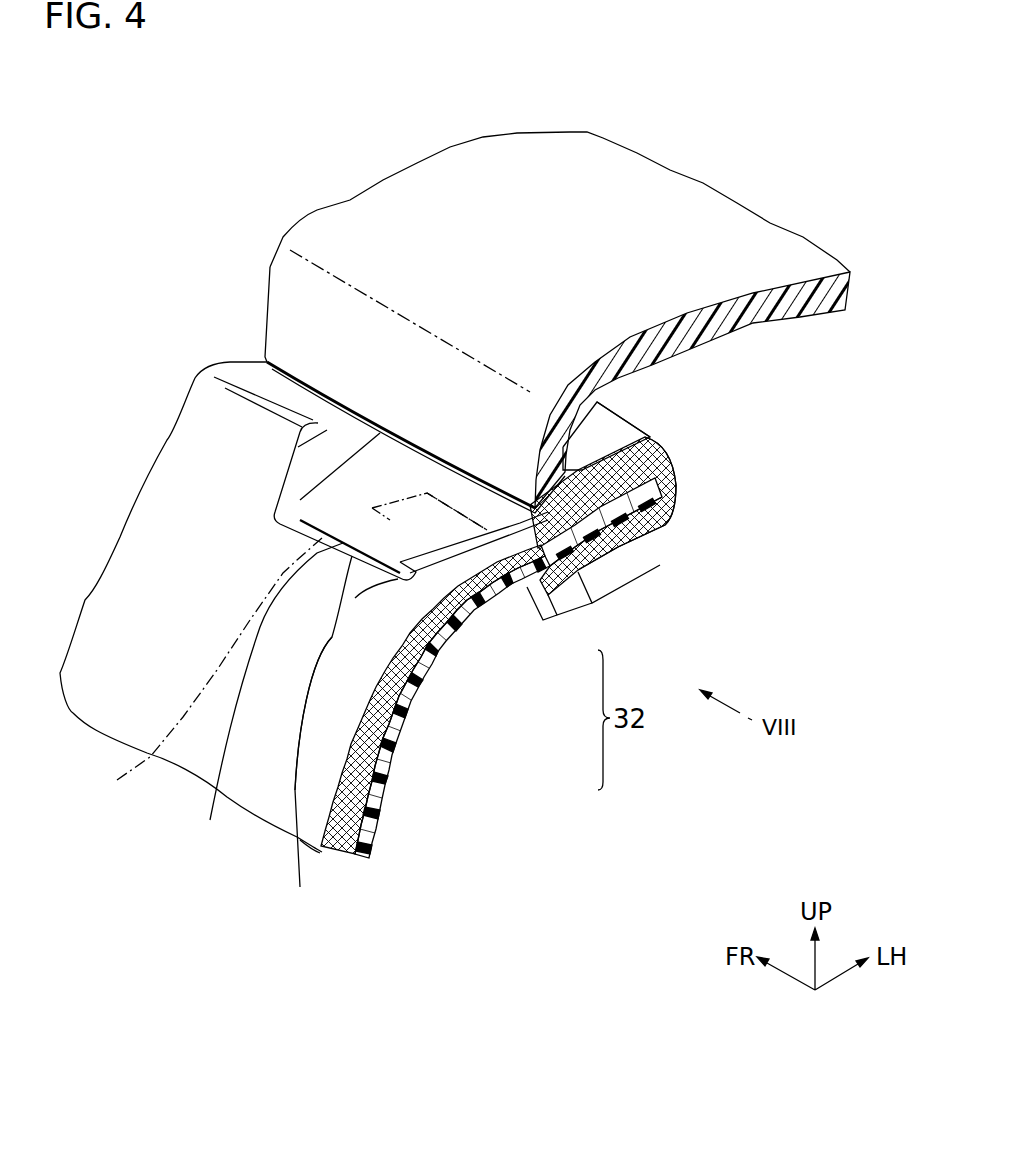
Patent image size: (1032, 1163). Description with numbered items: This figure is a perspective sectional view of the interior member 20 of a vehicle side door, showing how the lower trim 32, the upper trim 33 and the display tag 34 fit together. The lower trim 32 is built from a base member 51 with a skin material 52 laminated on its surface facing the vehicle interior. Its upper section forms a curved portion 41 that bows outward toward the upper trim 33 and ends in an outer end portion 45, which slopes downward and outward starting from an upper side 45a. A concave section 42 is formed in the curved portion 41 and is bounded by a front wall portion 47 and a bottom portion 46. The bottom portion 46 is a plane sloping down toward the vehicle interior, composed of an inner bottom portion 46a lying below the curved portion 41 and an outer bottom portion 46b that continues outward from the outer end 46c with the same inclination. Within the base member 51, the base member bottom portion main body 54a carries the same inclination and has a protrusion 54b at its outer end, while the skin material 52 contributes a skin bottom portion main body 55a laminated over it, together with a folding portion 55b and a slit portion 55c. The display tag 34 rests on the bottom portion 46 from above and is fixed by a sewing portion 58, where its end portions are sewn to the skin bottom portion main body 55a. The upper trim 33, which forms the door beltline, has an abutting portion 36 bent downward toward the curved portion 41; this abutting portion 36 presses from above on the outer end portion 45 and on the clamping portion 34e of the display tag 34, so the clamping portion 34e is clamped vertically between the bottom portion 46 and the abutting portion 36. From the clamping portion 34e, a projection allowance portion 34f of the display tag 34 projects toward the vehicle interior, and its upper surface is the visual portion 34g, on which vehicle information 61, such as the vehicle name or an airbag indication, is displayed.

The interior member 20 is at (306, 190).
The upper trim 33 is at (672, 174).
The display tag 34 is at (458, 478).
The abutting portion 36 is at (293, 276).
The outer end portion 45 is at (258, 366).
The upper side 45a is at (224, 368).
The lower trim 32 is at (192, 572).
The curved portion 41 is at (230, 421).
The front wall portion 47 is at (320, 443).
The projection allowance portion 34f is at (337, 497).
The visual portion 34g is at (266, 511).
The vehicle information 61 is at (203, 667).
The concave section 42 is at (268, 694).
The bottom portion 46 is at (342, 735).
The skin bottom portion main body 55a is at (299, 788).
The inner bottom portion 46a is at (440, 660).
The base member 51 is at (462, 669).
The skin material 52 is at (440, 742).
The base member bottom portion main body 54a is at (532, 603).
The outer end 46c is at (585, 598).
The clamping portion 34e is at (602, 580).
The folding portion 55b is at (602, 573).
The protrusion 54b is at (660, 527).
The slit portion 55c is at (675, 452).
The outer bottom portion 46b is at (623, 423).
The sewing portion 58 is at (620, 437).